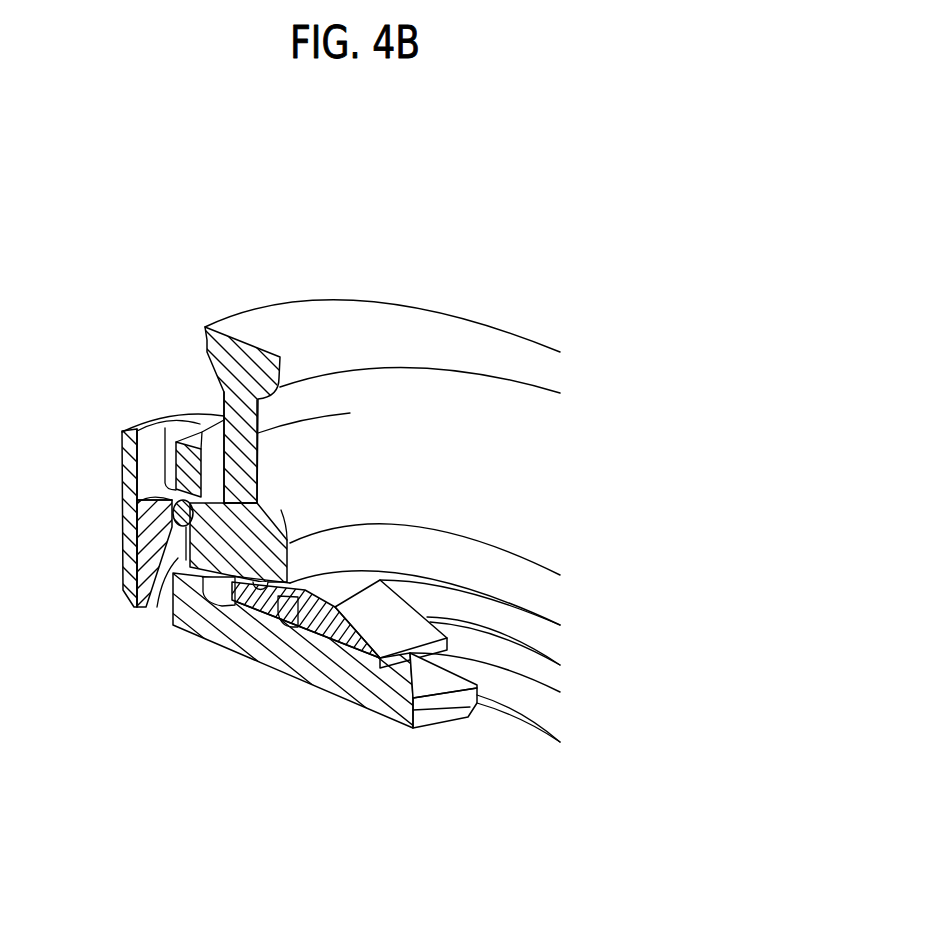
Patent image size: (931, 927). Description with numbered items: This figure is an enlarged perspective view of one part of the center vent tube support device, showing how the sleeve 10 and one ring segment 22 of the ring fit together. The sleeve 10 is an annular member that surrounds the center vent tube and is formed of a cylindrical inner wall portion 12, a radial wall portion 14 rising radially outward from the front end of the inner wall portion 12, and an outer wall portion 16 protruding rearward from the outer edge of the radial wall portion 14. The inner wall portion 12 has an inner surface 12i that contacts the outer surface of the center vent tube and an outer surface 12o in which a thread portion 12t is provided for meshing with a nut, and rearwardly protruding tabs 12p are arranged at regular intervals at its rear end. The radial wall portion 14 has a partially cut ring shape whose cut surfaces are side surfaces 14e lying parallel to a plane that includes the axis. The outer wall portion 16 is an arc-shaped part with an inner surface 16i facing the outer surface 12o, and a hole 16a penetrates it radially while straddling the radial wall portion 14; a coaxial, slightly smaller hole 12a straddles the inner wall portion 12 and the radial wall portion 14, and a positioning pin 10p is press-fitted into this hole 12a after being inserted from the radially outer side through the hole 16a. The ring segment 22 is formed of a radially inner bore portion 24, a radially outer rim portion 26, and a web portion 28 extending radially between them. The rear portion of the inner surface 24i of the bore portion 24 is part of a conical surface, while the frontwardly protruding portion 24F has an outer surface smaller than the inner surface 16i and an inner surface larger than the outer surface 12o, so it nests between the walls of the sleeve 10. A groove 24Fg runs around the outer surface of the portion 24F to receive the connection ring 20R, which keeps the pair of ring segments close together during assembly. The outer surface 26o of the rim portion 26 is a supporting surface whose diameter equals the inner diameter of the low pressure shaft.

The sleeve 10 is at (210, 643).
The positioning pin 10p is at (155, 576).
The inner wall portion 12 is at (282, 660).
The hole 12a is at (167, 620).
The inner surface 12i is at (240, 660).
The thread portion 12t is at (307, 633).
The outer surface 12o is at (410, 680).
The tab 12p is at (437, 702).
The radial wall portion 14 is at (122, 507).
The side surface 14e is at (138, 543).
The outer wall portion 16 is at (203, 432).
The inner surface 16i is at (145, 447).
The hole 16a is at (150, 438).
The connection ring 20R is at (133, 472).
The ring segment 22 is at (400, 303).
The bore portion 24 is at (287, 560).
The inner surface 24i is at (289, 540).
The frontwardly protruding portion 24F is at (155, 608).
The groove 24Fg is at (237, 508).
The rim portion 26 is at (520, 352).
The outer surface 26o is at (262, 326).
The web portion 28 is at (326, 416).